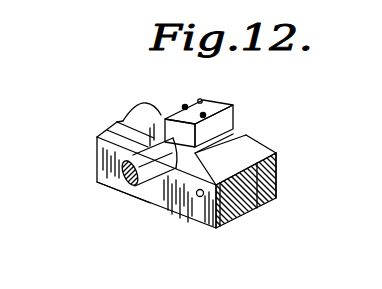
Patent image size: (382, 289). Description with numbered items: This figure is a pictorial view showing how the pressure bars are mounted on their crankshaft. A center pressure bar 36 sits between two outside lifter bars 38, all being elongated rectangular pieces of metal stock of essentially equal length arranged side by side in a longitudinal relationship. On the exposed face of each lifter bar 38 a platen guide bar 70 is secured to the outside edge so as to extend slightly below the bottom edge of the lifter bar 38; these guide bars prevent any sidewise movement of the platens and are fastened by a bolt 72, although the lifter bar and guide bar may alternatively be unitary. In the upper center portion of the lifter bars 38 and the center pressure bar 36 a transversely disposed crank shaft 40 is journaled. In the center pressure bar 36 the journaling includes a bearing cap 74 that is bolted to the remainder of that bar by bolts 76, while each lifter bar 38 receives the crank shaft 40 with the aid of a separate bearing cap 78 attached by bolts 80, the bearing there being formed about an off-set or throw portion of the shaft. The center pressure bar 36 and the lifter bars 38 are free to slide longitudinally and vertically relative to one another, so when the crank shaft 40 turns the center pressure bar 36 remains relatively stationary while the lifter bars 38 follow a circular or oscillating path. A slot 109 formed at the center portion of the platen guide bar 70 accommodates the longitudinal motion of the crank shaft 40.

The platen guide bar 70 is at (158, 193).
The bolt 72 is at (199, 196).
The bearing cap 74 is at (236, 130).
The bolts 76 is at (188, 106).
The bearing cap 78 is at (137, 119).
The bolts 80 is at (160, 110).
The crank shaft 40 is at (97, 174).
The slot 109 is at (148, 198).
The center pressure bar 36 is at (256, 204).
The lifter bar 38 is at (232, 214).